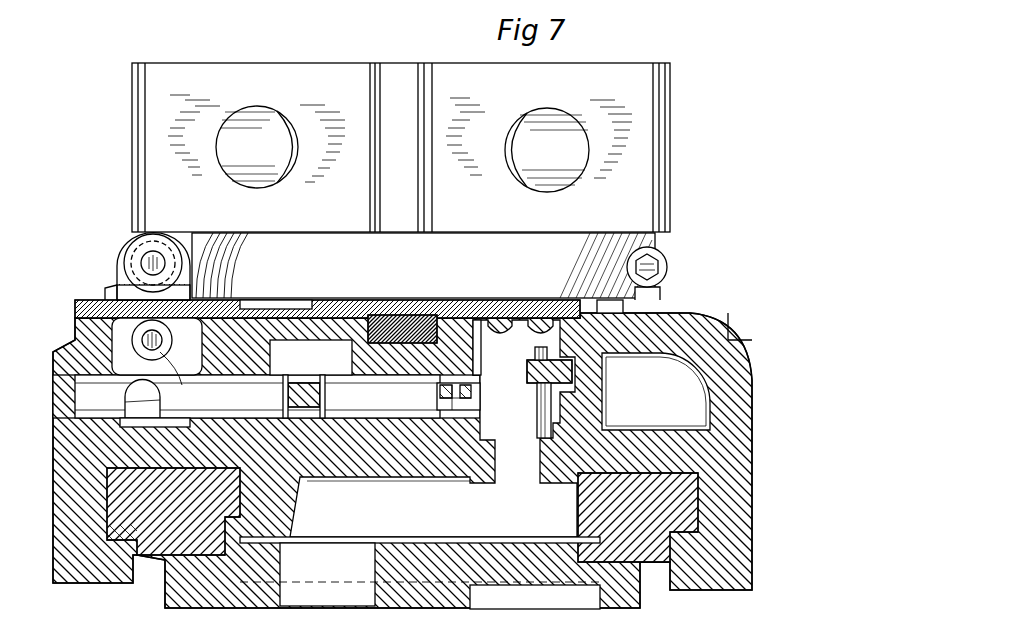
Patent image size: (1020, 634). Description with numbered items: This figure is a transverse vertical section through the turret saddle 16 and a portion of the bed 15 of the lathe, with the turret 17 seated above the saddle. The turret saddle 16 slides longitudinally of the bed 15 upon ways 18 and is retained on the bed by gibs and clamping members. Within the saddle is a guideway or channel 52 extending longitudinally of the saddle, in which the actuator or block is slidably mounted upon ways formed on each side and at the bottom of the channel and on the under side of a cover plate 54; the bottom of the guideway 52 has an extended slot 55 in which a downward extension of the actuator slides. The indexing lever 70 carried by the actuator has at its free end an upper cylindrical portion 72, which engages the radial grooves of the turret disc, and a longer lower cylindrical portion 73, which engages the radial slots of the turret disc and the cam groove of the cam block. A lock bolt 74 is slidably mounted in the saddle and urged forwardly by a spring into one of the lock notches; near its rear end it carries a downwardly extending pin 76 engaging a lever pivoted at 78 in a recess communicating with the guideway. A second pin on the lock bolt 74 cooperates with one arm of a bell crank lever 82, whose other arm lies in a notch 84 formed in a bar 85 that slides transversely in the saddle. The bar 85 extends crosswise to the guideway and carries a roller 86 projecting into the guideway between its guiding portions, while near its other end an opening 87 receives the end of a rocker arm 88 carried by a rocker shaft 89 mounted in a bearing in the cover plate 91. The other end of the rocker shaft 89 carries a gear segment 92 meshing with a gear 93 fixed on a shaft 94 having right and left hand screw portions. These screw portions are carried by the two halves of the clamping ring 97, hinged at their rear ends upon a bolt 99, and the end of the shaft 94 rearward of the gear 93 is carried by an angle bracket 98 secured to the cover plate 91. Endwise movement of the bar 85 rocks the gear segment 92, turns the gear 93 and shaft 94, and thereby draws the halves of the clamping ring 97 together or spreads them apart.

The bed 15 is at (246, 590).
The turret saddle 16 is at (690, 318).
The turret 17 is at (640, 162).
The ways 18 is at (110, 478).
The guideway or channel 52 is at (506, 356).
The cover plate 54 is at (468, 298).
The extended slot 55 is at (524, 470).
The indexing lever 70 is at (526, 372).
The cylindrical portion 72 is at (530, 348).
The cylindrical portion 73 is at (538, 426).
The lock bolt 74 is at (416, 300).
The pin 76 is at (417, 627).
The pivot 78 is at (471, 627).
The bell crank lever 82 is at (326, 397).
The notch 84 is at (304, 380).
The bar 85 is at (510, 460).
The roller 86 is at (474, 392).
The opening 87 is at (166, 410).
The rocker arm 88 is at (172, 372).
The rocker shaft 89 is at (142, 340).
The cover plate 91 is at (212, 300).
The gear segment 92 is at (106, 290).
The gear 93 is at (176, 242).
The shaft 94 is at (156, 258).
The clamping ring 97 is at (470, 247).
The angle bracket 98 is at (132, 253).
The bolt 99 is at (668, 260).